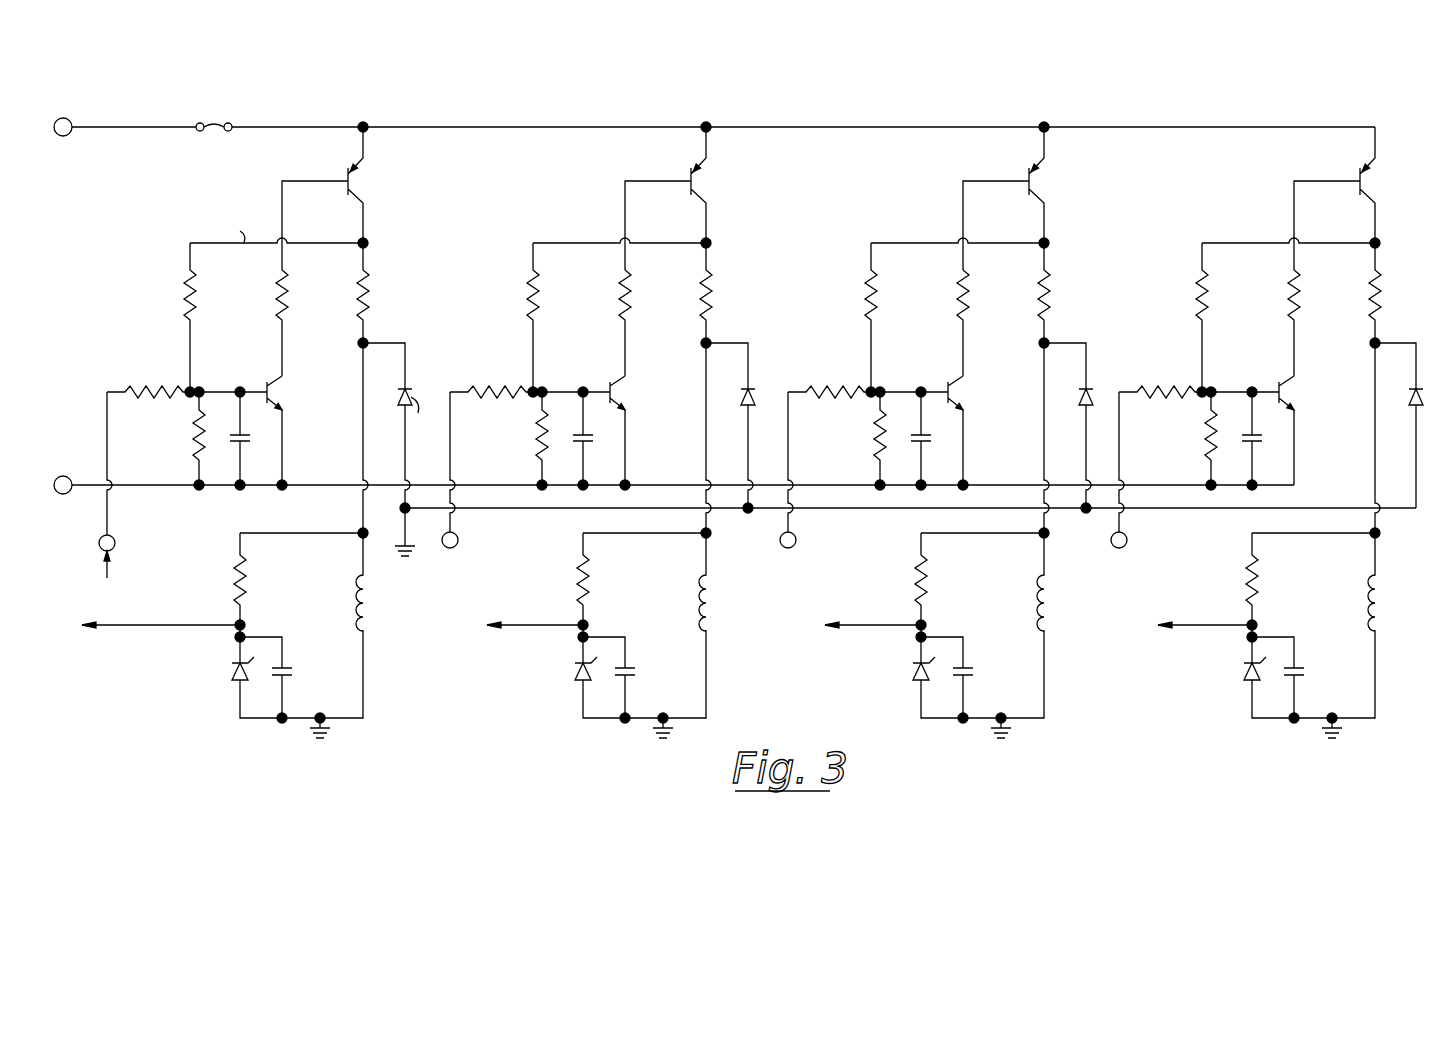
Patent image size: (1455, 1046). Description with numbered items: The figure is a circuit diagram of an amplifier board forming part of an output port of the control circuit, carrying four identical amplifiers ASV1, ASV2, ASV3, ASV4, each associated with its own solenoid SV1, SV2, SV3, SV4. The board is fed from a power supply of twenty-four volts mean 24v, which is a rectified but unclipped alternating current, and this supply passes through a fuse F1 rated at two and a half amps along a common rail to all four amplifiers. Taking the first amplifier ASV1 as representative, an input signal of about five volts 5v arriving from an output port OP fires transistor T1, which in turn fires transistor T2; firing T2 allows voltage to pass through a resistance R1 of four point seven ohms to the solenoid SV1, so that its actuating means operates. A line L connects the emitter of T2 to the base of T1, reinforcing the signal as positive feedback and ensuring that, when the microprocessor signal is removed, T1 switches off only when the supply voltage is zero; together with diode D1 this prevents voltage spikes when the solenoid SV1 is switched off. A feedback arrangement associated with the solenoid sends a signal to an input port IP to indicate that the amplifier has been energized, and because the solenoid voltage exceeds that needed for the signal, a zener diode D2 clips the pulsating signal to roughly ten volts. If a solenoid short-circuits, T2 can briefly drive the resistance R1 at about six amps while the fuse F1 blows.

The 24 volt power supply 24v is at (712, 110).
The fuse F1 is at (212, 145).
The transistor T2 is at (344, 198).
The line L is at (233, 226).
The resistance R1 is at (387, 293).
The transistor T1 is at (281, 430).
The diode D1 is at (401, 423).
The output port OP is at (672, 513).
The input signal of about 5 volts 5v is at (120, 491).
The input port IP is at (161, 645).
The zener diode D2 is at (217, 676).
The solenoid SV1 is at (396, 582).
The amplifier ASV1 is at (259, 656).
The solenoid SV2 is at (738, 582).
The amplifier ASV2 is at (632, 656).
The solenoid SV3 is at (1076, 582).
The amplifier ASV3 is at (970, 656).
The solenoid SV4 is at (1407, 582).
The amplifier ASV4 is at (1302, 656).